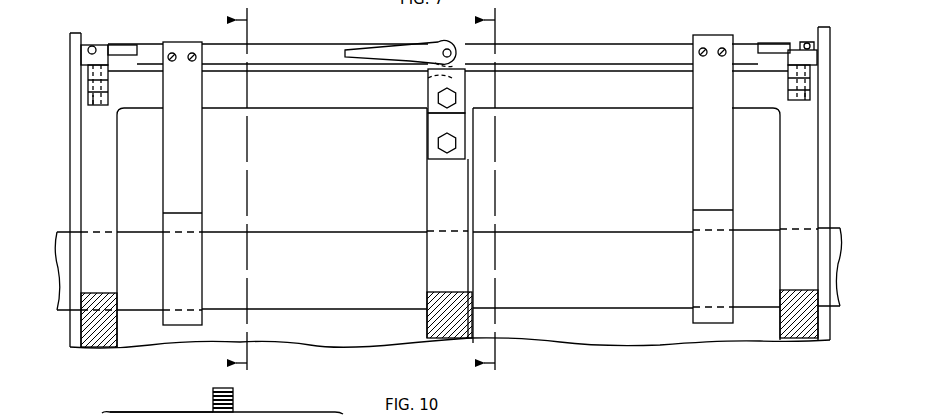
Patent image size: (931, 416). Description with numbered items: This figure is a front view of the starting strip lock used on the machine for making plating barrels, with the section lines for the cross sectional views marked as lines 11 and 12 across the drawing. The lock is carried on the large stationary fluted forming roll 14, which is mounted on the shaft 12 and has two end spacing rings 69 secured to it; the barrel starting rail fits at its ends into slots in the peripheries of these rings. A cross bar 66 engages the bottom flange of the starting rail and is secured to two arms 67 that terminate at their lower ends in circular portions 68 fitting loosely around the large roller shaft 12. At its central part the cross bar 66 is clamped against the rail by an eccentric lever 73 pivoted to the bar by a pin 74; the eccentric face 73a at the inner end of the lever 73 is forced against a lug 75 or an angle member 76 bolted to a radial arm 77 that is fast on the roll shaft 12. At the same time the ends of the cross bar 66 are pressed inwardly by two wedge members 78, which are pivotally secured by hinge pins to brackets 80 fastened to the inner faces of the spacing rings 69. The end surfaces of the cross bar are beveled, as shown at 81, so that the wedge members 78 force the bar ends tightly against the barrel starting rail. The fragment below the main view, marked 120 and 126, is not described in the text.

In FIG. 7, the fluted forming roll 11 is at (253, 190).
In FIG. 7, the shaft 12 is at (538, 232).
In FIG. 7, the large stationary fluted forming roll 14 is at (287, 92).
In FIG. 7, the cross bar 66 is at (300, 46).
In FIG. 7, the arms 67 is at (180, 165).
In FIG. 7, the circular portions 68 is at (170, 222).
In FIG. 7, the end spacing rings 69 is at (75, 32).
In FIG. 7, the eccentric lever 73 is at (396, 52).
In FIG. 7, the eccentric face 73a is at (428, 80).
In FIG. 7, the pin 74 is at (450, 44).
In FIG. 7, the lug 75 is at (458, 77).
In FIG. 7, the angle member 76 is at (460, 153).
In FIG. 7, the radial arm 77 is at (436, 193).
In FIG. 7, the wedge members 78 is at (93, 46).
In FIG. 7, the brackets 80 is at (84, 100).
In FIG. 7, the beveled end surfaces 81 is at (124, 46).
In FIG. 10, the threaded bolt 120 is at (233, 395).
In FIG. 10, the base plate 126 is at (193, 412).